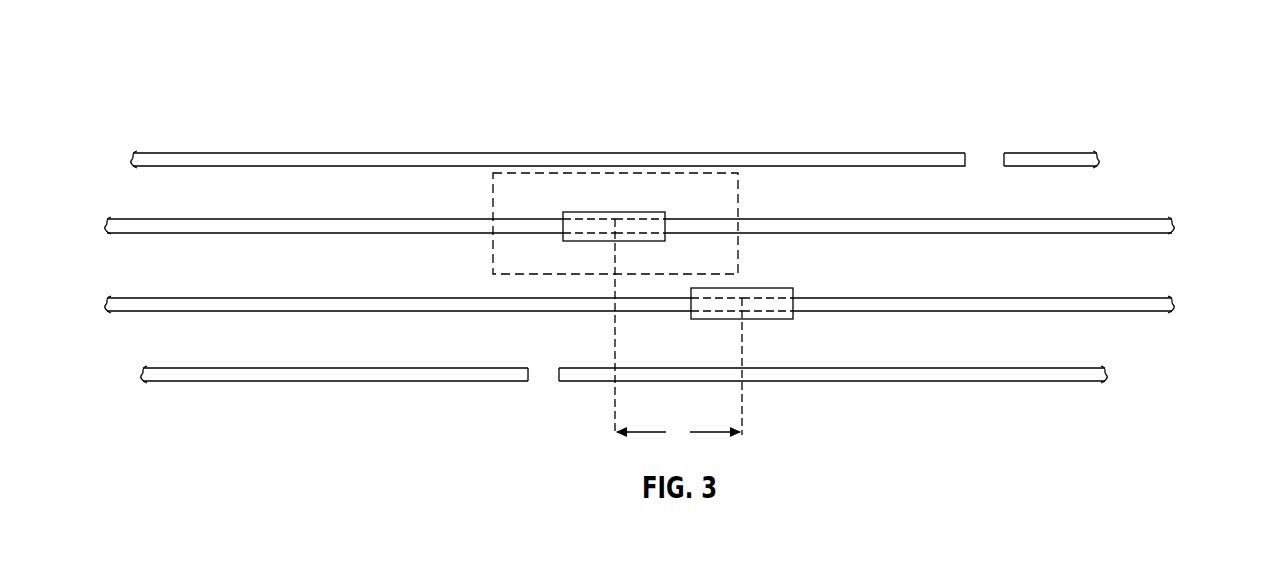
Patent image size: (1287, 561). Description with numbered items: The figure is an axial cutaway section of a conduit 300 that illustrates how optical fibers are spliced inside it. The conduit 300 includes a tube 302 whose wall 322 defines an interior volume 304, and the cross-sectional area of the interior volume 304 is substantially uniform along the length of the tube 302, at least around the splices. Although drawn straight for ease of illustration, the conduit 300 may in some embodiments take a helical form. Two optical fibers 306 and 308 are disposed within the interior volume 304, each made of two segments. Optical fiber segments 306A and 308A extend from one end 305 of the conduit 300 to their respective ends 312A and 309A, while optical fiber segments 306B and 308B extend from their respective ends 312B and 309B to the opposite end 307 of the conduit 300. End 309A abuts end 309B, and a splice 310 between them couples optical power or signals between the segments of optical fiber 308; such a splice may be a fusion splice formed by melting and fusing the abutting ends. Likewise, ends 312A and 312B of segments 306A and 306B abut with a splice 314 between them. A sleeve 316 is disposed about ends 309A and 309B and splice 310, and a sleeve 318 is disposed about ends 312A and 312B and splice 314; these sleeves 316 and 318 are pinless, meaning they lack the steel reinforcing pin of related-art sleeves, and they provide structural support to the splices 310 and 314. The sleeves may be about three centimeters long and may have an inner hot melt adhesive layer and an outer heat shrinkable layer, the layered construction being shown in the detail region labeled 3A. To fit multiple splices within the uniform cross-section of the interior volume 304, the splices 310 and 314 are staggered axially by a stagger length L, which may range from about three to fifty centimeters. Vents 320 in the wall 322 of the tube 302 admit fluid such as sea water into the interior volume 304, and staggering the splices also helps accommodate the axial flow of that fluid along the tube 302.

The conduit 300 is at (178, 94).
The tube 302 is at (284, 151).
The interior volume 304 is at (945, 181).
The end of conduit 305 is at (109, 200).
The optical fiber 306 is at (1067, 346).
The optical fiber segment 306A is at (538, 313).
The optical fiber segment 306B is at (955, 313).
The end of conduit 307 is at (1188, 269).
The optical fiber 308 is at (1152, 209).
The optical fiber segment 308A is at (298, 217).
The optical fiber segment 308B is at (875, 217).
The end of optical fiber segment 309A is at (594, 212).
The end of optical fiber segment 309B is at (642, 212).
The splice 310 is at (618, 236).
The end of optical fiber segment 312A is at (715, 313).
The end of optical fiber segment 312B is at (753, 294).
The splice 314 is at (743, 312).
The sleeve 316 is at (668, 214).
The sleeve 318 is at (795, 292).
The vents 320 is at (988, 162).
The wall 322 is at (838, 158).
The detail region 3A is at (491, 205).